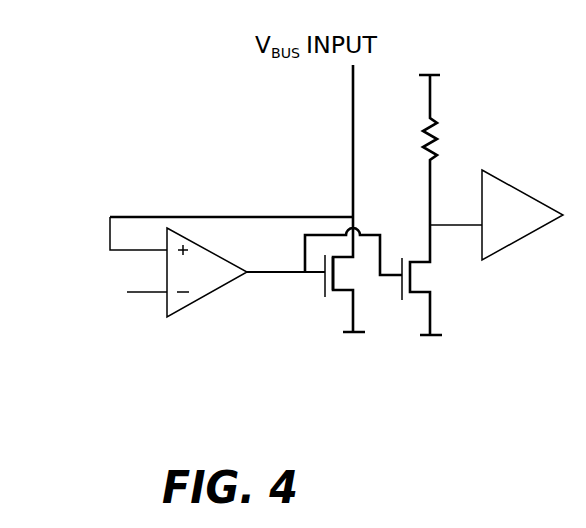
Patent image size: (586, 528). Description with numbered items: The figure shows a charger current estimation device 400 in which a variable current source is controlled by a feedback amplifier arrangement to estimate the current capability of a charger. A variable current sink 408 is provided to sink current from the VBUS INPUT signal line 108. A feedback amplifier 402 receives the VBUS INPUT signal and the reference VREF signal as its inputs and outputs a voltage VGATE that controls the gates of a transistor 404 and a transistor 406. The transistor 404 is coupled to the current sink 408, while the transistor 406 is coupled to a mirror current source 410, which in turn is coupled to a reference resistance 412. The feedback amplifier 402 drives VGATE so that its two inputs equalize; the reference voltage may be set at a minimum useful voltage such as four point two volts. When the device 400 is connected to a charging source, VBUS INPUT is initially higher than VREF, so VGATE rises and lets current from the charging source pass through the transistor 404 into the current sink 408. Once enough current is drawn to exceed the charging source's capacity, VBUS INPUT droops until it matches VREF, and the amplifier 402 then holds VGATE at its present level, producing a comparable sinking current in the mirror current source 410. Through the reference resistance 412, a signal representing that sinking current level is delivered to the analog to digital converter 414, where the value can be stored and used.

The charger current estimation device 400 is at (198, 99).
The VBUS INPUT signal line 108 is at (122, 217).
The feedback amplifier 402 is at (205, 300).
The transistor 404 is at (312, 287).
The transistor 406 is at (450, 307).
The current sink 408 is at (362, 422).
The mirror current source 410 is at (450, 421).
The reference resistance 412 is at (412, 149).
The analog to digital converter 414 is at (502, 178).